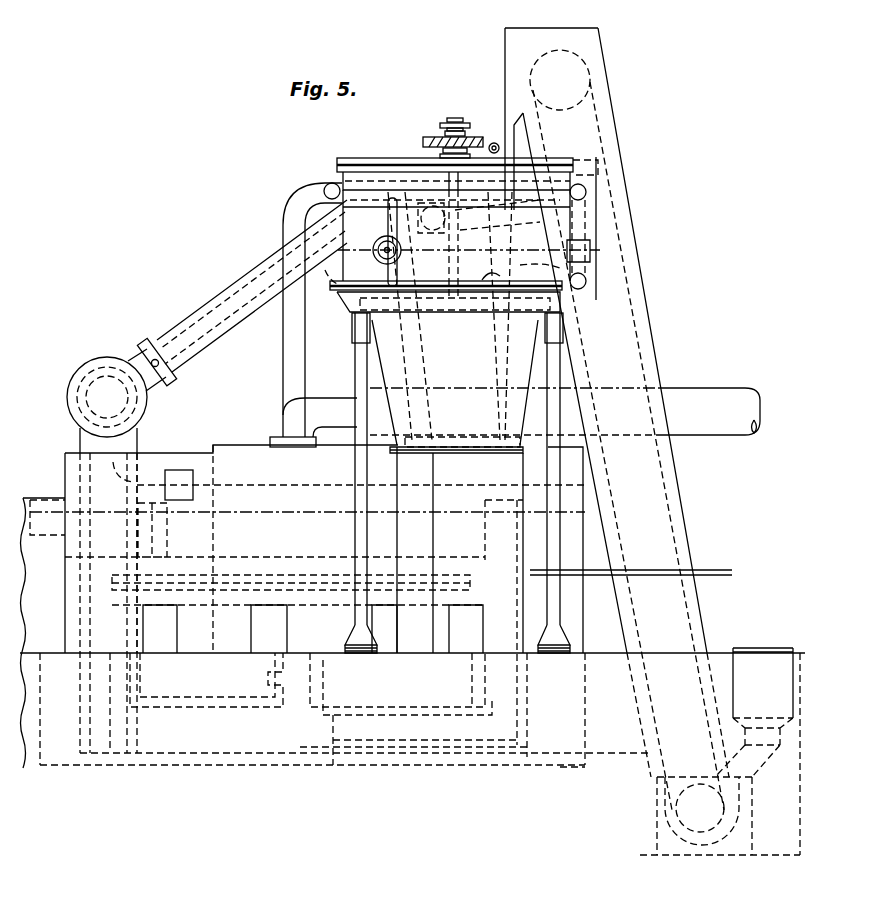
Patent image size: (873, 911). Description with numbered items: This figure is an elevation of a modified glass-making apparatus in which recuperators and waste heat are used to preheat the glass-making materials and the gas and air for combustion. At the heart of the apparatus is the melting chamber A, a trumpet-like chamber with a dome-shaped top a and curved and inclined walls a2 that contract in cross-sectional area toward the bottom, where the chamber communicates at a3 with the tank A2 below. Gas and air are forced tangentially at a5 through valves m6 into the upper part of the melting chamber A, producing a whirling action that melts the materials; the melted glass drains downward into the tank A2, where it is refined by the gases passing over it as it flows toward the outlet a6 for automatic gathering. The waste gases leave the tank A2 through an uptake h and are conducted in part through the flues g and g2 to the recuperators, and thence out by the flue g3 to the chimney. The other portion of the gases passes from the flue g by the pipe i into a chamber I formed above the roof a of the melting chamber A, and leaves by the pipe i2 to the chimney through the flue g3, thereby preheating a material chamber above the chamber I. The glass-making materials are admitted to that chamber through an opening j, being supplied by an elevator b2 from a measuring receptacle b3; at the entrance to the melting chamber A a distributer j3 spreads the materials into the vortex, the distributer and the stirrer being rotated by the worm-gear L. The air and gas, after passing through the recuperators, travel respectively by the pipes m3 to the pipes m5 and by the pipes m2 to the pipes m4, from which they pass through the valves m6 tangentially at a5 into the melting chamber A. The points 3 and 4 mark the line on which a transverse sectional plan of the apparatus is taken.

The melting chamber A is at (457, 483).
The tank A2 is at (412, 606).
The dome-shaped top a is at (479, 223).
The curved and inclined walls a2 is at (562, 298).
The outlet a3 is at (465, 458).
The gas and air inlets a5 is at (538, 262).
The outlet a6 is at (47, 512).
The elevator b2 is at (612, 172).
The measuring receptacle b3 is at (760, 680).
The flue g is at (107, 372).
The flues g2 is at (530, 665).
The flue g3 is at (331, 402).
The uptake h is at (128, 447).
The pipe i is at (252, 284).
The pipe i2 is at (403, 242).
The opening j is at (517, 142).
The distributer j3 is at (453, 209).
The worm-gear L is at (492, 144).
The gas pipes m2 is at (500, 338).
The air pipes m3 is at (290, 361).
The gas pipes m4 is at (489, 266).
The air pipes m5 is at (352, 192).
The valves m6 is at (380, 252).
The chamber I is at (462, 234).
The section line 3 is at (322, 281).
The section line 4 is at (590, 252).